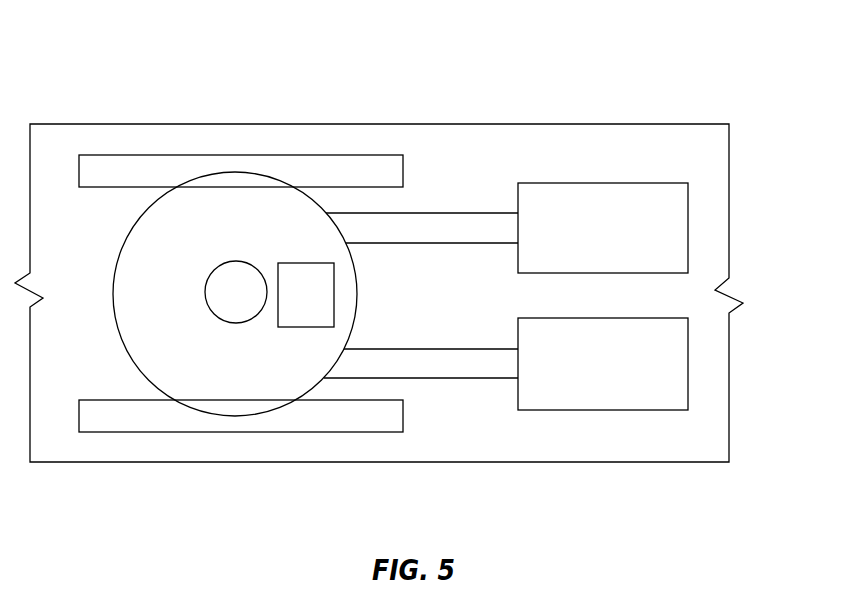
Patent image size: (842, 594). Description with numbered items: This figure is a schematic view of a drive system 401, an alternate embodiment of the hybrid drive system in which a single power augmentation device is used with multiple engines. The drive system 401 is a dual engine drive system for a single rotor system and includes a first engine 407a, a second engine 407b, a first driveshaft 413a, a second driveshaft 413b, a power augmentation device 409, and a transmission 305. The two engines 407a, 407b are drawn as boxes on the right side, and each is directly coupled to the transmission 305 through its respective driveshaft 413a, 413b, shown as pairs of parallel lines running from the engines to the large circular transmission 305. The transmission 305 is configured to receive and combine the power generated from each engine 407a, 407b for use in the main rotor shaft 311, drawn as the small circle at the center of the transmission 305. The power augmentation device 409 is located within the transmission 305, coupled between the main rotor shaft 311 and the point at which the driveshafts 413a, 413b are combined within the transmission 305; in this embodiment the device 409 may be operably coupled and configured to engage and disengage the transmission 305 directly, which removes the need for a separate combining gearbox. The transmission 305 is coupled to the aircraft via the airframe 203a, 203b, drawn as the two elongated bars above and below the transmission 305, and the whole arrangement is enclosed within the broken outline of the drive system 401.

The drive system 401 is at (134, 90).
The airframe 203a is at (228, 432).
The airframe 203b is at (207, 155).
The transmission 305 is at (123, 247).
The main rotor shaft 311 is at (206, 300).
The power augmentation device 409 is at (307, 263).
The first driveshaft 413a is at (490, 379).
The second driveshaft 413b is at (483, 213).
The first engine 407a is at (645, 411).
The second engine 407b is at (623, 183).